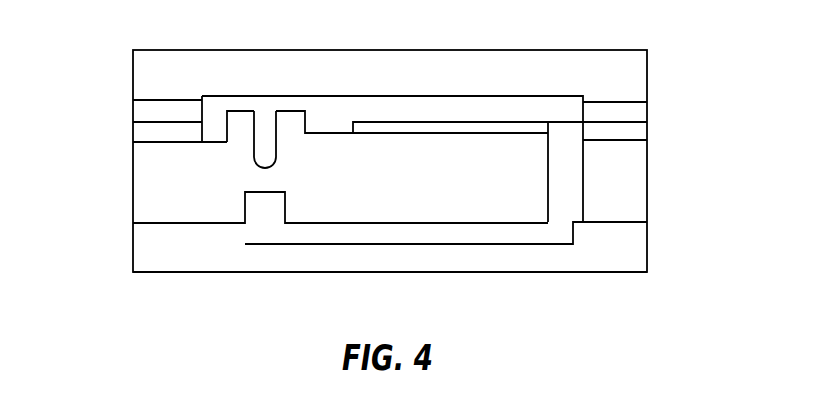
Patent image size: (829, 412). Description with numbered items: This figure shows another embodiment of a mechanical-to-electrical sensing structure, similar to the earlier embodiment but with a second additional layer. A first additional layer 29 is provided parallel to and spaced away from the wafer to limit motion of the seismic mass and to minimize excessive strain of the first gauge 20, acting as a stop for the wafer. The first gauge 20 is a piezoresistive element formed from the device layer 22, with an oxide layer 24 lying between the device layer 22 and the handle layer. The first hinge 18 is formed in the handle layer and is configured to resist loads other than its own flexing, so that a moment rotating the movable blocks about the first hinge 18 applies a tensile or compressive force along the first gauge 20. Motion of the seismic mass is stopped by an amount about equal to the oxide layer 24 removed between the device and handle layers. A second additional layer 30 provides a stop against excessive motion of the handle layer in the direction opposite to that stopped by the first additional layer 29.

The first additional layer 29 is at (145, 70).
The device layer 22 is at (635, 111).
The oxide layer 24 is at (633, 130).
The first gauge 20 is at (265, 120).
The first hinge 18 is at (265, 157).
The second additional layer 30 is at (633, 247).